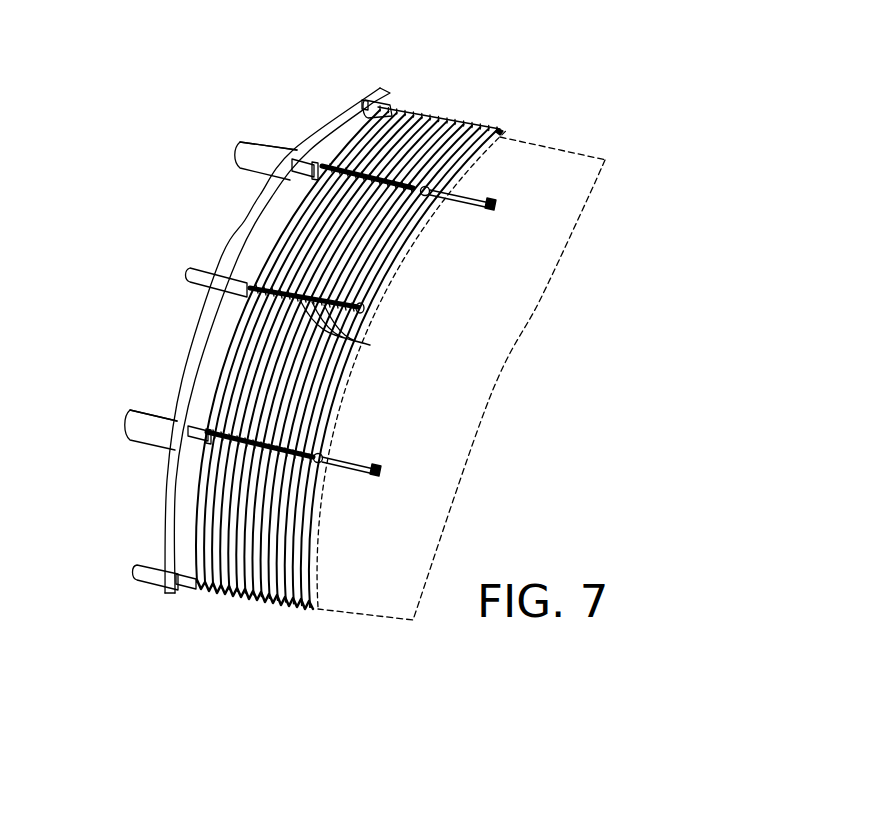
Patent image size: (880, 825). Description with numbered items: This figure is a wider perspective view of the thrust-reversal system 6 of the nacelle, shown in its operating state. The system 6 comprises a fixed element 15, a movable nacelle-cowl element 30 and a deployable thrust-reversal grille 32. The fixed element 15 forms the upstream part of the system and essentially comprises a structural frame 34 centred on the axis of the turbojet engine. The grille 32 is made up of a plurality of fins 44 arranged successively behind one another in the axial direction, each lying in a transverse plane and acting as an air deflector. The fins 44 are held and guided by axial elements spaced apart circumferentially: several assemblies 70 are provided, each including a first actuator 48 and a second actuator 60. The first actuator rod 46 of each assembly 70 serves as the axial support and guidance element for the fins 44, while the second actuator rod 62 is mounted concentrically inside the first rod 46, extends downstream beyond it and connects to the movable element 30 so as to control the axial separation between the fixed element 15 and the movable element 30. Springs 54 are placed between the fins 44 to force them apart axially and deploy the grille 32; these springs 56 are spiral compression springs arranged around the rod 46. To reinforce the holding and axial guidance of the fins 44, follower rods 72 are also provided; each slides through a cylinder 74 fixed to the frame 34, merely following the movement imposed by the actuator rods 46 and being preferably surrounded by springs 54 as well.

The thrust-reversal system 6 is at (575, 150).
The fixed element 15 is at (253, 340).
The movable nacelle-cowl element 30 is at (548, 297).
The thrust-reversal grille 32 is at (457, 121).
The structural frame 34 is at (257, 205).
The fins 44 is at (377, 250).
The first actuator rod 46 is at (315, 166).
The first actuator 48 is at (300, 162).
The springs 54 is at (426, 196).
The springs 56 is at (370, 345).
The second actuator 60 is at (259, 143).
The second actuator rod 62 is at (466, 194).
The assemblies 70 is at (239, 141).
The follower rods 72 is at (252, 290).
The cylinder 74 is at (330, 103).